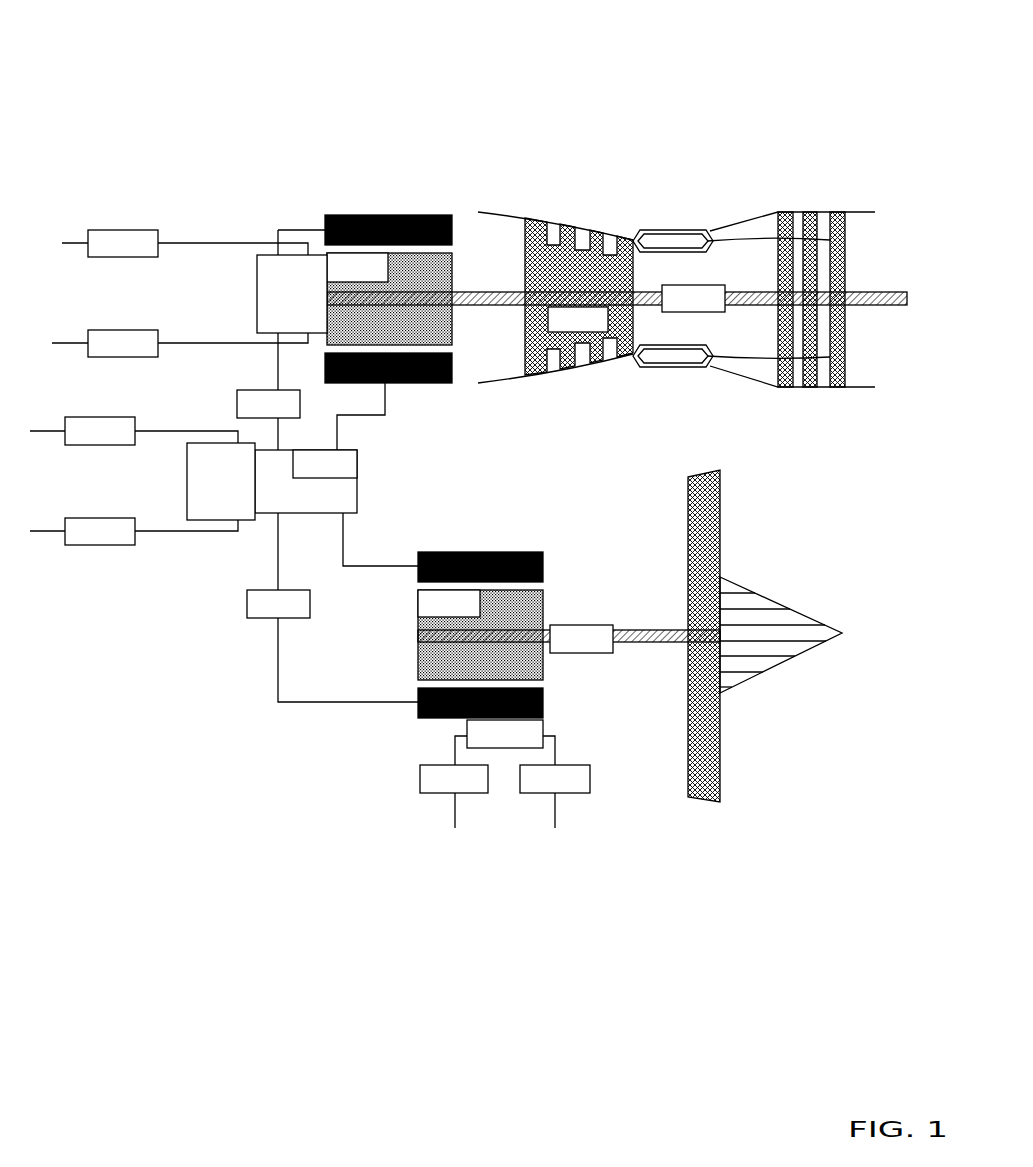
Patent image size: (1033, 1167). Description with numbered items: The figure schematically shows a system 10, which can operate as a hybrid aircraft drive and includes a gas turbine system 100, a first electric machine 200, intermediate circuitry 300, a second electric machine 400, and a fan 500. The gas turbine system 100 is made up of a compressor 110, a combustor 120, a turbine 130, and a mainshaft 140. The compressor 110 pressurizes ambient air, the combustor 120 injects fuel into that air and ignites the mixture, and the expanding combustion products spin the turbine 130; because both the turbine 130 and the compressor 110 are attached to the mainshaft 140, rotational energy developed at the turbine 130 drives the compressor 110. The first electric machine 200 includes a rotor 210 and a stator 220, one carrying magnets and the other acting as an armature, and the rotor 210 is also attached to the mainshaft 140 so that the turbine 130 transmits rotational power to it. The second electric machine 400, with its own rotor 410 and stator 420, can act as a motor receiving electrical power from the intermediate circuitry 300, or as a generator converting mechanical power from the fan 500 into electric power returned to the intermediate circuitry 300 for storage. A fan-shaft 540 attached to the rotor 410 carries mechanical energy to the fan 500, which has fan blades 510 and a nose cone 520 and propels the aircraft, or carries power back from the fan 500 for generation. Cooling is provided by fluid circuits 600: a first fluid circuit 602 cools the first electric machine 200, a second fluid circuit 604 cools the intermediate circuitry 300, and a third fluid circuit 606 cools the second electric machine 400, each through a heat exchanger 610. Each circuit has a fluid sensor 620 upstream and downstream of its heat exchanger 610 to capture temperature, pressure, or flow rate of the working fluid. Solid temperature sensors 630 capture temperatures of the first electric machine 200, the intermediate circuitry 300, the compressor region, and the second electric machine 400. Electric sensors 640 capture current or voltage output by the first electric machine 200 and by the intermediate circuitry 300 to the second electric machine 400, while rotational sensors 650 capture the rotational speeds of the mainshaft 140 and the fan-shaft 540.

The system 10 is at (255, 65).
The gas turbine system 100 is at (674, 207).
The compressor 110 is at (527, 223).
The combustor 120 is at (710, 250).
The turbine 130 is at (813, 212).
The mainshaft 140 is at (893, 288).
The first electric machine 200 is at (342, 183).
The rotor 210 is at (452, 268).
The stator 220 is at (388, 217).
The intermediate circuitry 300 is at (222, 552).
The second electric machine 400 is at (397, 622).
The rotor 410 is at (545, 610).
The stator 420 is at (513, 550).
The fan 500 is at (840, 558).
The fan blades 510 is at (688, 493).
The nose cone 520 is at (820, 647).
The fan-shaft 540 is at (632, 645).
The fluid circuit 600 is at (310, 544).
The first fluid circuit 602 is at (227, 242).
The second fluid circuit 604 is at (190, 430).
The third fluid circuit 606 is at (455, 803).
The heat exchanger 610 is at (365, 501).
The fluid sensor 620 is at (327, 511).
The solid temperature sensor 630 is at (450, 435).
The electric sensor 640 is at (327, 466).
The rotational sensor 650 is at (637, 469).